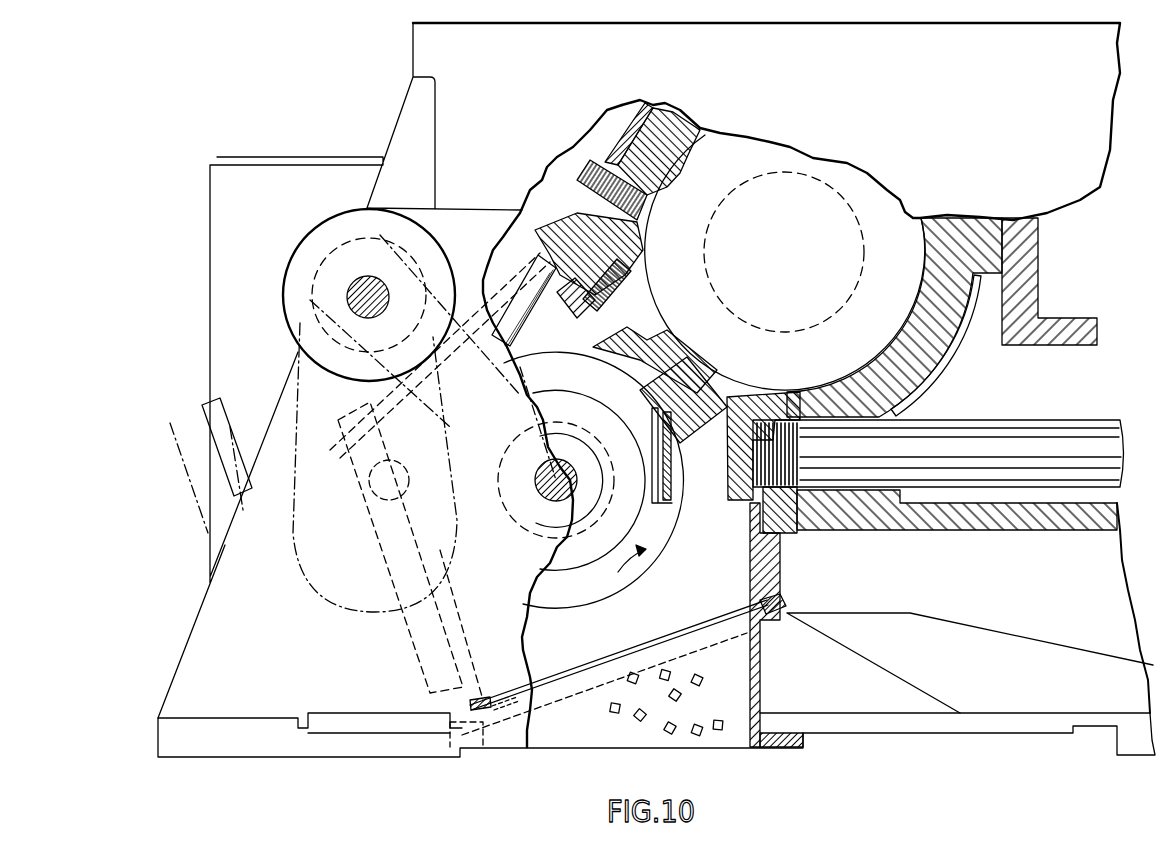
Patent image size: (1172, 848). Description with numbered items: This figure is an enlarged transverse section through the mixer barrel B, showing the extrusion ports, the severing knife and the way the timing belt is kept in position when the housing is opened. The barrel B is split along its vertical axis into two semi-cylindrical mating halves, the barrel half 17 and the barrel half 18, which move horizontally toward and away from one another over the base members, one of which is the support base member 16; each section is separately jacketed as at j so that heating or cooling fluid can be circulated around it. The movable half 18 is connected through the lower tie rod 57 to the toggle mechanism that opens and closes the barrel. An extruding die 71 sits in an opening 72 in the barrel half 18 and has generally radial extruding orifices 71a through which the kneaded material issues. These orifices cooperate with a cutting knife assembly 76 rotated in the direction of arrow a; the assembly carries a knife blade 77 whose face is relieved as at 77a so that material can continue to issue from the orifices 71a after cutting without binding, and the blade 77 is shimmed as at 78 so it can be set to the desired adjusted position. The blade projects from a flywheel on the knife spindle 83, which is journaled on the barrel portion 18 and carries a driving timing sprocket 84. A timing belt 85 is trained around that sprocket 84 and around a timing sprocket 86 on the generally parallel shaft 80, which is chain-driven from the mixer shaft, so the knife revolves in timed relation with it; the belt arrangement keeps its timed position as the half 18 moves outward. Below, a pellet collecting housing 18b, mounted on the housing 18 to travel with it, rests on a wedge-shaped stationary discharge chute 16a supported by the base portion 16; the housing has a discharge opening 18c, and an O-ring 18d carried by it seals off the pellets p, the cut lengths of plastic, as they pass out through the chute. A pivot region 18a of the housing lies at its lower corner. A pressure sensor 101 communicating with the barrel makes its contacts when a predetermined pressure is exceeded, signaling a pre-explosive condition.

The support base member 16 is at (1012, 727).
The stationary discharge chute 16a is at (568, 740).
The barrel half 17 is at (1000, 258).
The barrel half 18 is at (662, 107).
The housing pivot portion 18a is at (483, 742).
The pellet collecting housing 18b is at (523, 257).
The discharge opening 18c is at (713, 617).
The O-ring 18d is at (780, 618).
The tie rod 57 is at (1057, 423).
The extruding die 71 is at (650, 336).
The extruding orifices 71a is at (707, 363).
The opening 72 is at (640, 292).
The cutting knife assembly 76 is at (683, 483).
The knife blade 77 is at (664, 490).
The relieved face 77a is at (673, 470).
The shim 78 is at (652, 425).
The parallel shaft 80 is at (367, 275).
The knife spindle 83 is at (553, 477).
The driving timing sprocket 84 is at (519, 437).
The timing belt 85 is at (463, 472).
The timing sprocket 86 is at (377, 352).
The pressure sensor 101 is at (582, 196).
The mixer barrel B is at (913, 210).
The arrow a is at (623, 567).
The jacket j is at (950, 360).
The pellets p is at (663, 728).